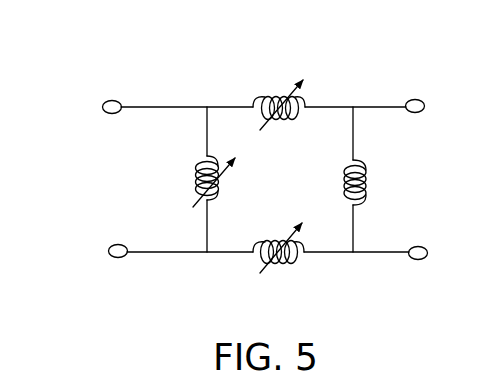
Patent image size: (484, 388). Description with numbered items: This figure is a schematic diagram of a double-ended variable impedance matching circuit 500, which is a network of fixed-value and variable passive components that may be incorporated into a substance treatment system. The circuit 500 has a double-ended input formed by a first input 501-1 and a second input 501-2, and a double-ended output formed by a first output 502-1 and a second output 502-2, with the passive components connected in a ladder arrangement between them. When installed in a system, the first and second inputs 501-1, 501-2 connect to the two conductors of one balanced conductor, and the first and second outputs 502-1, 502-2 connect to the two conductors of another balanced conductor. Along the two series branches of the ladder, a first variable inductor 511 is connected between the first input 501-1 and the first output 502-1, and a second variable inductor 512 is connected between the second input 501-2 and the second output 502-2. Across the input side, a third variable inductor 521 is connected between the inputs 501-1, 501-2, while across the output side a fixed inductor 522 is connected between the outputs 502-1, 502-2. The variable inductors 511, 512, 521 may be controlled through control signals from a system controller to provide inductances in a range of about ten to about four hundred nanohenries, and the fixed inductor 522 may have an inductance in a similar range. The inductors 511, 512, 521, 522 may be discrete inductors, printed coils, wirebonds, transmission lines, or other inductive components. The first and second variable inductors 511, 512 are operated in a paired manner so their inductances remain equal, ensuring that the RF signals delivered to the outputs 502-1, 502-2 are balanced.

The double-ended variable impedance matching circuit 500 is at (88, 82).
The first input 501-1 is at (113, 114).
The second input 501-2 is at (115, 266).
The first output 502-1 is at (417, 113).
The second output 502-2 is at (422, 262).
The first variable inductor 511 is at (285, 98).
The second variable inductor 512 is at (283, 243).
The third variable inductor 521 is at (198, 165).
The fixed inductor 522 is at (345, 165).